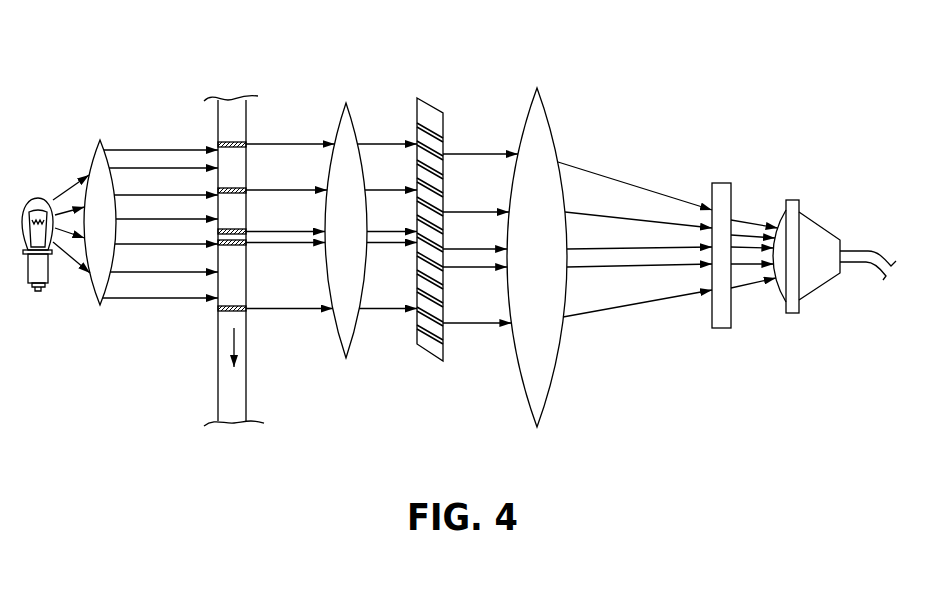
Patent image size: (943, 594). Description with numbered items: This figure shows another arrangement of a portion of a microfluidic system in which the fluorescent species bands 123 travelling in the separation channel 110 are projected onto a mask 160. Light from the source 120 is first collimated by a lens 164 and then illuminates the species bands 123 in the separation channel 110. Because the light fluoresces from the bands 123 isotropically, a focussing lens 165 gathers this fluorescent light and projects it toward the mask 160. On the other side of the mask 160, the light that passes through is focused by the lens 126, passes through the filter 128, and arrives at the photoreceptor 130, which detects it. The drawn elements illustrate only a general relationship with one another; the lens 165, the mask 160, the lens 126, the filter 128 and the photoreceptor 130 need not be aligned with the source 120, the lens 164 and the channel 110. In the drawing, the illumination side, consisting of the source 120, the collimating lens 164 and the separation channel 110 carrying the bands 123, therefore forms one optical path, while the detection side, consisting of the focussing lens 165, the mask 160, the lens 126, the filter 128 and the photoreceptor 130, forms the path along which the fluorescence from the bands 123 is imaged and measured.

The light source 120 is at (48, 284).
The collimating lens 164 is at (92, 162).
The separation channel 110 is at (247, 115).
The fluorescent species bands 123 is at (247, 144).
The focussing lens 165 is at (352, 122).
The mask 160 is at (430, 104).
The lens 126 is at (546, 108).
The filter 128 is at (733, 193).
The photoreceptor 130 is at (815, 222).